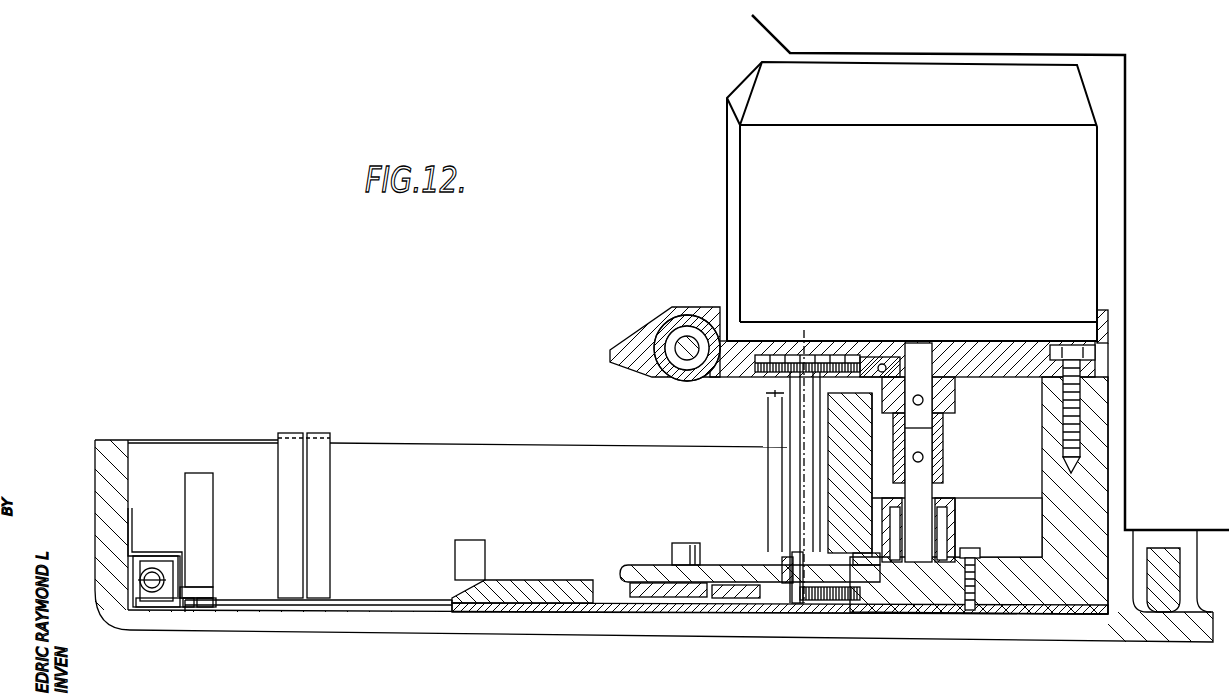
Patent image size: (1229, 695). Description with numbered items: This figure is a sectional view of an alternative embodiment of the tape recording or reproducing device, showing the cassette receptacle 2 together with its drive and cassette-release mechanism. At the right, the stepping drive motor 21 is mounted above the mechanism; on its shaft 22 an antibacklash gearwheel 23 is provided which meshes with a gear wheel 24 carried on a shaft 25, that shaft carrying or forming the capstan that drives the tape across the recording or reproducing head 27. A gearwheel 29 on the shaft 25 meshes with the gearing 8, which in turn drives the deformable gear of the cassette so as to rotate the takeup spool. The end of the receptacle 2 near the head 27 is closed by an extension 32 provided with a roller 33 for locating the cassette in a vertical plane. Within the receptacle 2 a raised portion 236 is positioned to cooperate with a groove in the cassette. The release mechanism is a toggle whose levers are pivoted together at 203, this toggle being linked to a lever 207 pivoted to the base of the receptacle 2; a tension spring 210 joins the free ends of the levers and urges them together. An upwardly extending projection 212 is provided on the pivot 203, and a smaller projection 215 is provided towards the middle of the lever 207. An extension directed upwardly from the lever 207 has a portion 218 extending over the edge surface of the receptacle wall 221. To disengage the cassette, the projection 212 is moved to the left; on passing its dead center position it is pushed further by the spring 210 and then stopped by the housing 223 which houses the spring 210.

The cassette receptacle 2 is at (395, 460).
The gearing 8 is at (623, 588).
The stepping drive motor 21 is at (925, 213).
The shaft 22 is at (918, 343).
The antibacklash gearwheel 23 is at (862, 363).
The gear wheel 24 is at (755, 374).
The shaft 25 is at (797, 388).
The recording or reproducing head 27 is at (853, 477).
The gearwheel 29 is at (883, 640).
The extension 32 is at (645, 332).
The roller 33 is at (680, 322).
The pivot 203 is at (207, 607).
The lever 207 is at (383, 600).
The tension spring 210 is at (163, 573).
The projection 212 is at (193, 503).
The projection 215 is at (468, 548).
The portion 218 is at (320, 433).
The receptacle wall 221 is at (412, 515).
The housing 223 is at (153, 552).
The raised portion 236 is at (528, 593).